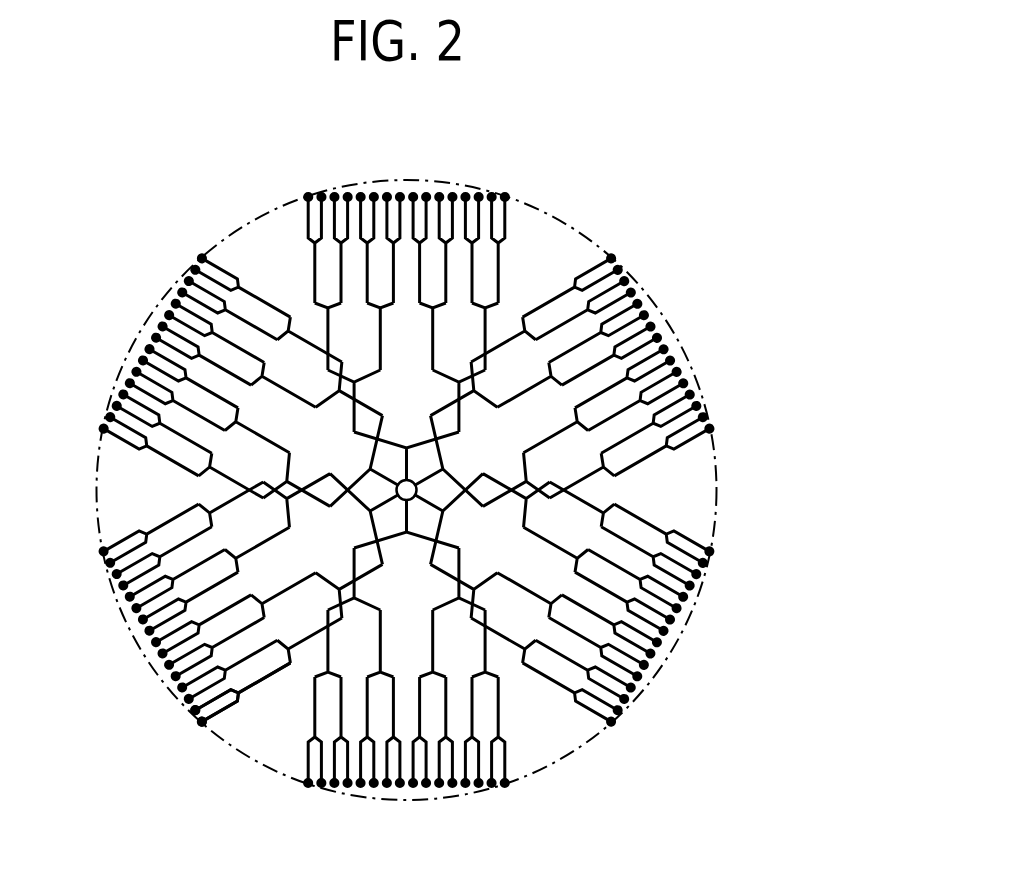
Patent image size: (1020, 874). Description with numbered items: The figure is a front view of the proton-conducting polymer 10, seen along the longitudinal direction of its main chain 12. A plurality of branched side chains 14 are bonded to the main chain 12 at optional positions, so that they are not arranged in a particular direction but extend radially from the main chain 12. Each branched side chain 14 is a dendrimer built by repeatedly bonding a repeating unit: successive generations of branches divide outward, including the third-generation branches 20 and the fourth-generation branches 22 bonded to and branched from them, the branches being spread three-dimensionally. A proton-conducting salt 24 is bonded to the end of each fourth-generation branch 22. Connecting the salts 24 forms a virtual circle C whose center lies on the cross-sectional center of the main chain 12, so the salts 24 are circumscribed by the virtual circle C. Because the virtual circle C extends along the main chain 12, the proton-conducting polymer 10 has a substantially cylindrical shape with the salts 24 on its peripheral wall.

The proton-conducting polymer 10 is at (637, 124).
The main chain 12 is at (409, 501).
The branched side chains 14 is at (291, 240).
The third-generation branches 20 is at (298, 681).
The fourth-generation branches 22 is at (210, 733).
The proton-conducting salt 24 is at (614, 258).
The virtual circle C is at (553, 770).